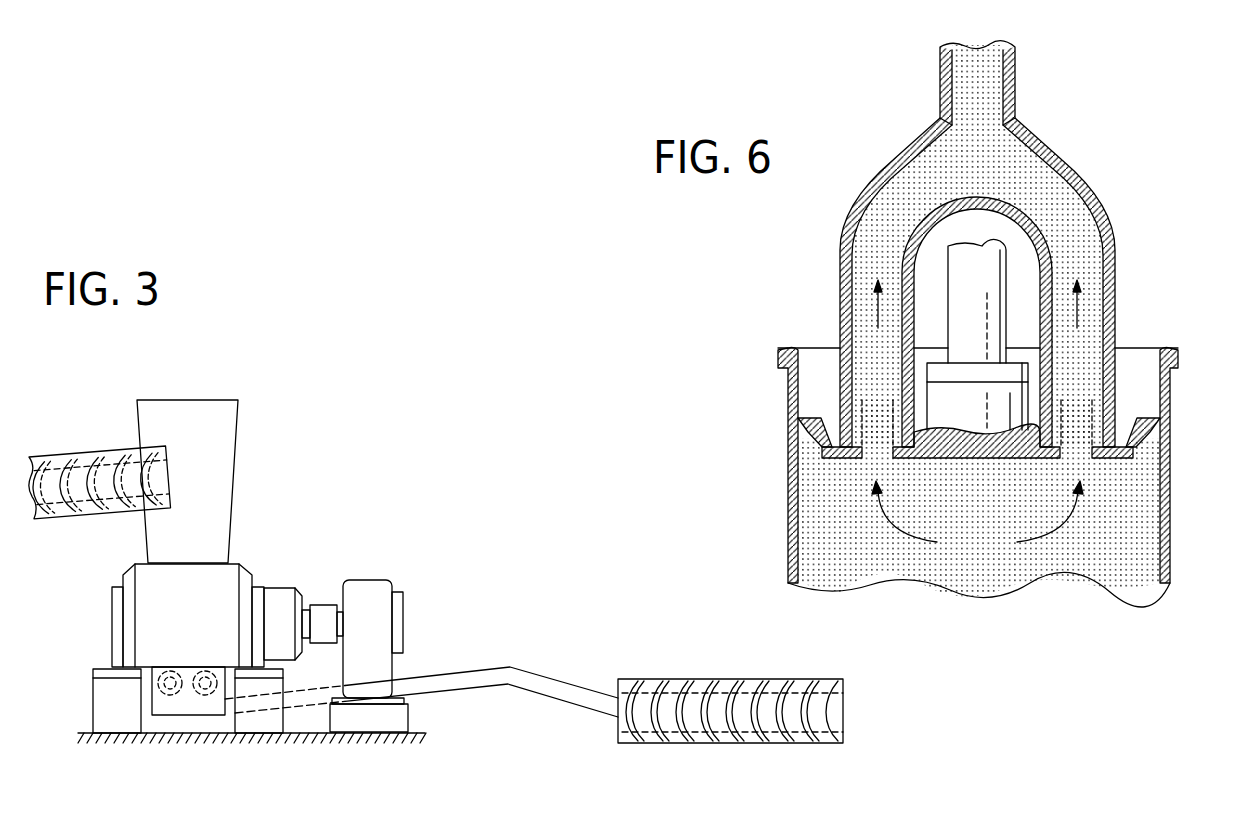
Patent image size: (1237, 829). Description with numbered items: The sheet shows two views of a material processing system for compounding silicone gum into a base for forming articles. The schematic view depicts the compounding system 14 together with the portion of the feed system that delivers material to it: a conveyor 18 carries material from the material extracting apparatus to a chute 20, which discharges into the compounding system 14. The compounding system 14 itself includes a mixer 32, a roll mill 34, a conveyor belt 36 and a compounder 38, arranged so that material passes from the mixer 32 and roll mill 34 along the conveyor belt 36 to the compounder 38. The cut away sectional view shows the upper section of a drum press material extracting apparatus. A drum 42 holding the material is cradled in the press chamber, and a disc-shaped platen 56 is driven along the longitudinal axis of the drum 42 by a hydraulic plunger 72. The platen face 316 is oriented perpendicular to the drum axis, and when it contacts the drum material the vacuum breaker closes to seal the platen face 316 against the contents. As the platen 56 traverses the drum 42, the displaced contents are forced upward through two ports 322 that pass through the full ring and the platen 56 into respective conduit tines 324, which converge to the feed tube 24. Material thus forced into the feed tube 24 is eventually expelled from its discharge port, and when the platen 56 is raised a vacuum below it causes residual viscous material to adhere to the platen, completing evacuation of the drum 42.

In FIG. 3, the compounding system 14 is at (397, 502).
In FIG. 3, the conveyor 18 is at (63, 453).
In FIG. 3, the chute 20 is at (240, 420).
In FIG. 3, the mixer 32 is at (142, 575).
In FIG. 3, the roll mill 34 is at (175, 708).
In FIG. 3, the conveyor belt 36 is at (472, 678).
In FIG. 3, the compounder 38 is at (723, 680).
In FIG. 6, the feed tube 24 is at (1015, 65).
In FIG. 6, the conduit tines 324 is at (840, 278).
In FIG. 6, the hydraulic plunger 72 is at (936, 330).
In FIG. 6, the drum 42 is at (788, 440).
In FIG. 6, the platen 56 is at (1117, 440).
In FIG. 6, the platen face 316 is at (1107, 462).
In FIG. 6, the ports 322 is at (873, 460).